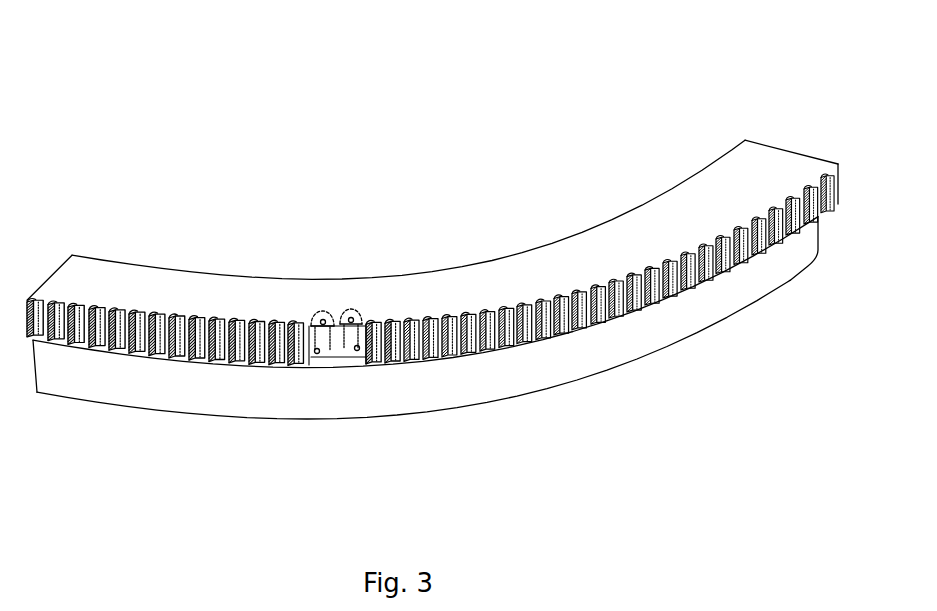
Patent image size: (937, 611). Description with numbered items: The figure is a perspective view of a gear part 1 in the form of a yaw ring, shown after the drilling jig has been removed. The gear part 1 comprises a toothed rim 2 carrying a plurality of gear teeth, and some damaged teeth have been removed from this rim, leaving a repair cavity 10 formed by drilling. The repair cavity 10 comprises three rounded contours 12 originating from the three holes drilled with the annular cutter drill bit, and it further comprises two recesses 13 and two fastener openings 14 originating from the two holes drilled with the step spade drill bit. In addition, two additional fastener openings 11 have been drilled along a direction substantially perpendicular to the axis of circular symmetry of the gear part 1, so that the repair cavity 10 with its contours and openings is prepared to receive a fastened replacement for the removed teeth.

The gear part 1 is at (715, 152).
The toothed rim 2 is at (700, 283).
The repair cavity 10 is at (340, 358).
The additional fastener openings 11 is at (317, 353).
The rounded contours 12 is at (362, 332).
The recesses 13 is at (314, 320).
The fastener openings 14 is at (322, 322).